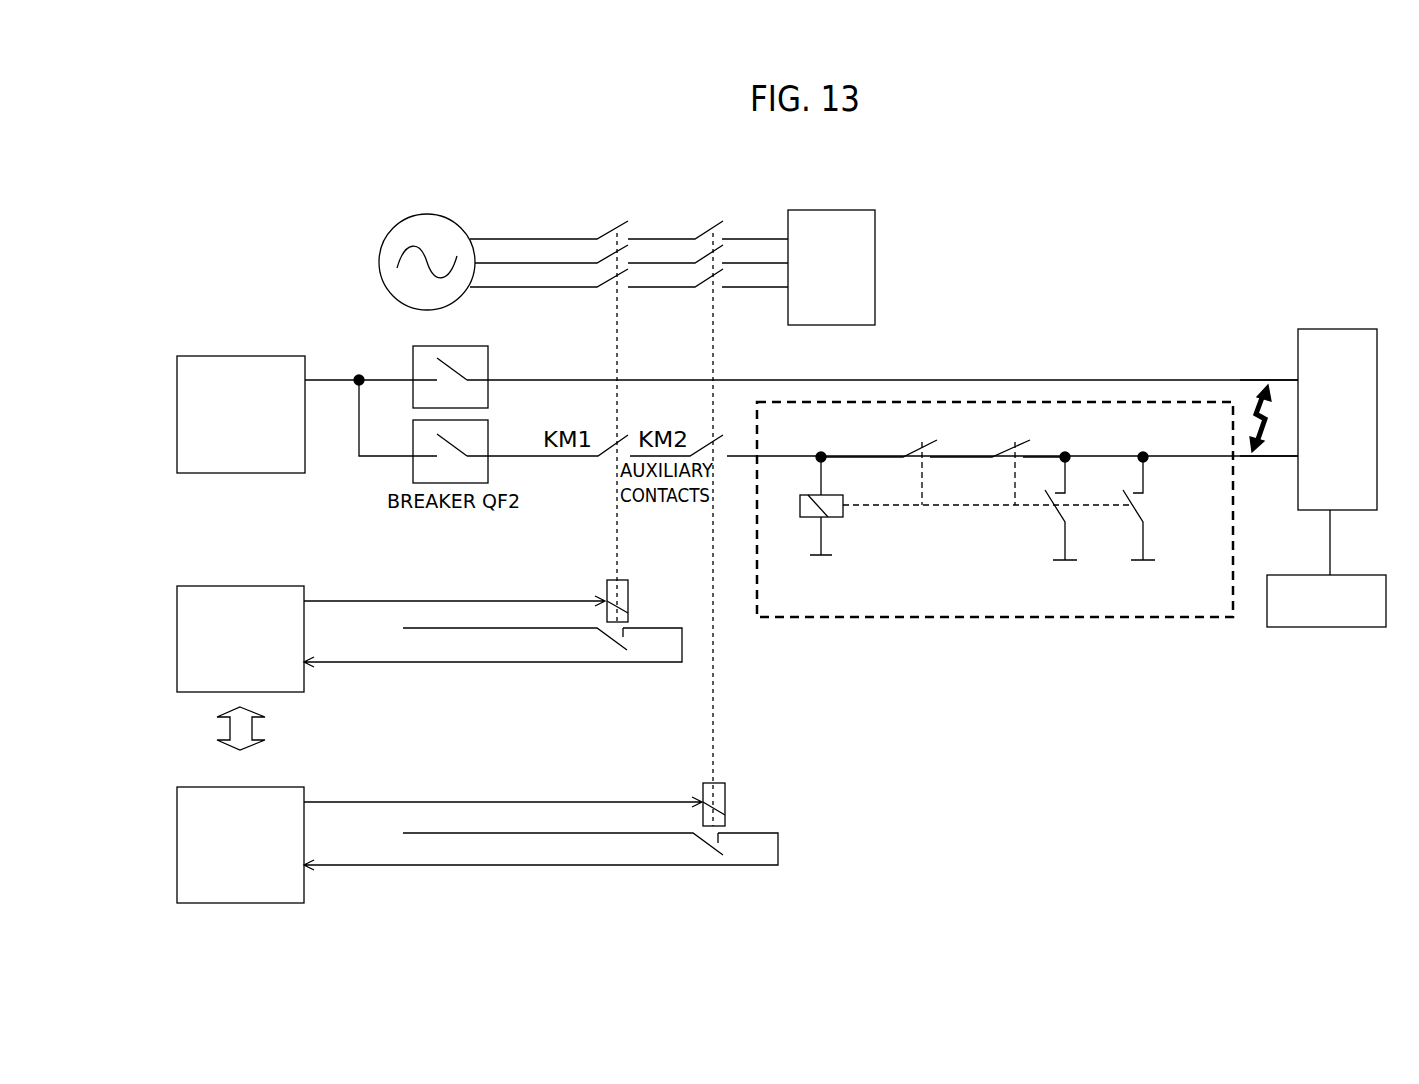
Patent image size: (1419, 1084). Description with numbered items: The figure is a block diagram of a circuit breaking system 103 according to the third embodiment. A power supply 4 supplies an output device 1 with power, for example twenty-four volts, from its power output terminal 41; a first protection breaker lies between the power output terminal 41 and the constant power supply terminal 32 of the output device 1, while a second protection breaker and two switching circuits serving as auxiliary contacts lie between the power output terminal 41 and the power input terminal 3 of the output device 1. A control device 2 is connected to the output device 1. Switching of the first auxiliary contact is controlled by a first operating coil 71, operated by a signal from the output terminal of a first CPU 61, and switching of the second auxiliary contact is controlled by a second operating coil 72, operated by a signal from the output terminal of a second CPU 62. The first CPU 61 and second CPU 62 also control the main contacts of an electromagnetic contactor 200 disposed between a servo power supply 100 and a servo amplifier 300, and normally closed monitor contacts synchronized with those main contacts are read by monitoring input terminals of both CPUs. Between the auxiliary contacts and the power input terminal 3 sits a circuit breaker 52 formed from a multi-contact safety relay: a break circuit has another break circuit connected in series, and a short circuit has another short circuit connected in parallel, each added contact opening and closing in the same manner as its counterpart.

The circuit breaking system 103 is at (1108, 235).
The servo power supply 100 is at (463, 229).
The electromagnetic contactor 200 is at (725, 231).
The servo amplifier 300 is at (875, 275).
The power supply 4 is at (270, 356).
The power output terminal 41 is at (305, 378).
The circuit breaker 52 is at (1100, 618).
The output device 1 is at (1298, 330).
The constant power supply terminal 32 is at (1298, 379).
The power input terminal 3 is at (1298, 458).
The control device 2 is at (1267, 627).
The first CPU 61 is at (304, 592).
The second CPU 62 is at (304, 792).
The first operating coil 71 is at (628, 597).
The second operating coil 72 is at (725, 800).